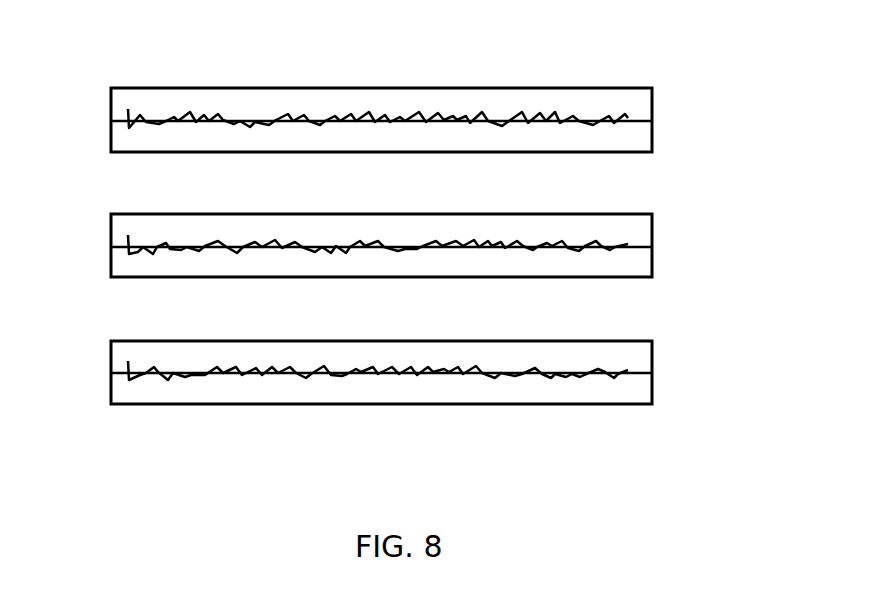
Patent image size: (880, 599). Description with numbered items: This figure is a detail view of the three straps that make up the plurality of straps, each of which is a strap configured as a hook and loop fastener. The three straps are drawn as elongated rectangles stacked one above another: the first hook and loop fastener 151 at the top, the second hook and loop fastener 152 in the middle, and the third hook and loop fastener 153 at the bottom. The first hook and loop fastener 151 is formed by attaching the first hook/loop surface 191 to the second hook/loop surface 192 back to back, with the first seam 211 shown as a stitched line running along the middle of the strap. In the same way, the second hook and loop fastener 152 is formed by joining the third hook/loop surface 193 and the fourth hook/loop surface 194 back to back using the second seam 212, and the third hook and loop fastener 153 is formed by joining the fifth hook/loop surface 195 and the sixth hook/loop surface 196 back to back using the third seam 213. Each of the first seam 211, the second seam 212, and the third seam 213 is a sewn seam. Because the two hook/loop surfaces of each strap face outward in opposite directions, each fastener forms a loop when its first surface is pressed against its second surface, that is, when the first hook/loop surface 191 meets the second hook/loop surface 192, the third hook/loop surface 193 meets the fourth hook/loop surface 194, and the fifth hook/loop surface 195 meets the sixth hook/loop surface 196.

The first hook and loop fastener 151 is at (652, 110).
The second hook and loop fastener 152 is at (652, 237).
The third hook and loop fastener 153 is at (652, 363).
The first hook/loop surface 191 is at (110, 104).
The second hook/loop surface 192 is at (110, 133).
The third hook/loop surface 193 is at (110, 230).
The fourth hook/loop surface 194 is at (110, 260).
The fifth hook/loop surface 195 is at (110, 355).
The sixth hook/loop surface 196 is at (110, 387).
The first seam 211 is at (343, 113).
The second seam 212 is at (378, 243).
The third seam 213 is at (375, 366).